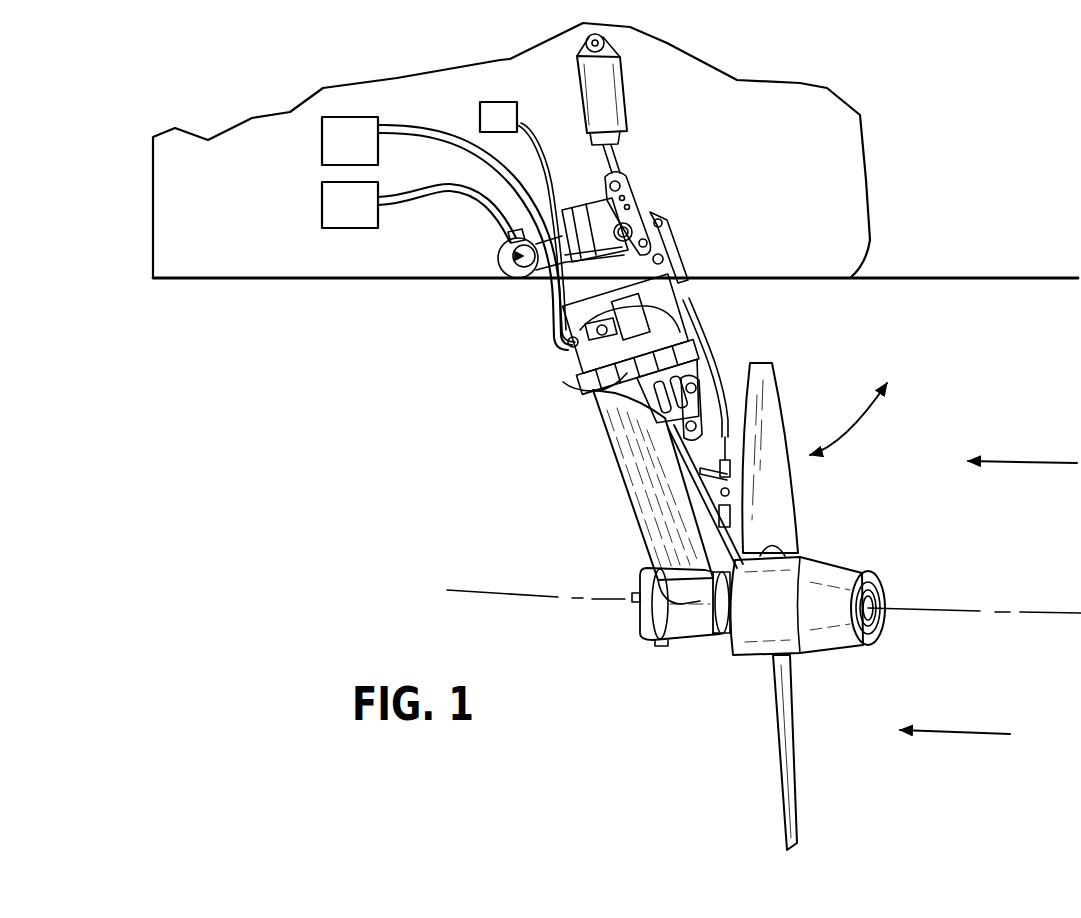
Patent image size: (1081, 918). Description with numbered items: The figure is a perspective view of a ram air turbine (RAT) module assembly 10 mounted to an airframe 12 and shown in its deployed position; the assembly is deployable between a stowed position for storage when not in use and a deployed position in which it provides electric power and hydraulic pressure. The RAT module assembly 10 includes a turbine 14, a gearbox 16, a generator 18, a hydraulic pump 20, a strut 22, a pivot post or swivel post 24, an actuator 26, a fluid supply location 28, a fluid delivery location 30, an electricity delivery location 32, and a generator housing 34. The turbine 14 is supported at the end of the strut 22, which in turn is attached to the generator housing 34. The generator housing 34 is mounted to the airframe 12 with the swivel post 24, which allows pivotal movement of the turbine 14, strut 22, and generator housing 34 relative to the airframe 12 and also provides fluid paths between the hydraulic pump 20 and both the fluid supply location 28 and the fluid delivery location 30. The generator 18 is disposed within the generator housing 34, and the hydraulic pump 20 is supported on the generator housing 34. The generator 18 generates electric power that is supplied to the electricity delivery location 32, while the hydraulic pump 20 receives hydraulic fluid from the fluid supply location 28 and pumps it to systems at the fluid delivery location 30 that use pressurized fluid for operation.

The ram air turbine module assembly 10 is at (845, 362).
The airframe 12 is at (855, 222).
The turbine 14 is at (747, 641).
The gearbox 16 is at (690, 628).
The generator 18 is at (540, 344).
The hydraulic pump 20 is at (590, 230).
The strut 22 is at (640, 492).
The pivot post 24 is at (499, 263).
The actuator 26 is at (622, 92).
The fluid supply location 28 is at (322, 204).
The fluid delivery location 30 is at (322, 143).
The electricity delivery location 32 is at (480, 114).
The generator housing 34 is at (643, 297).